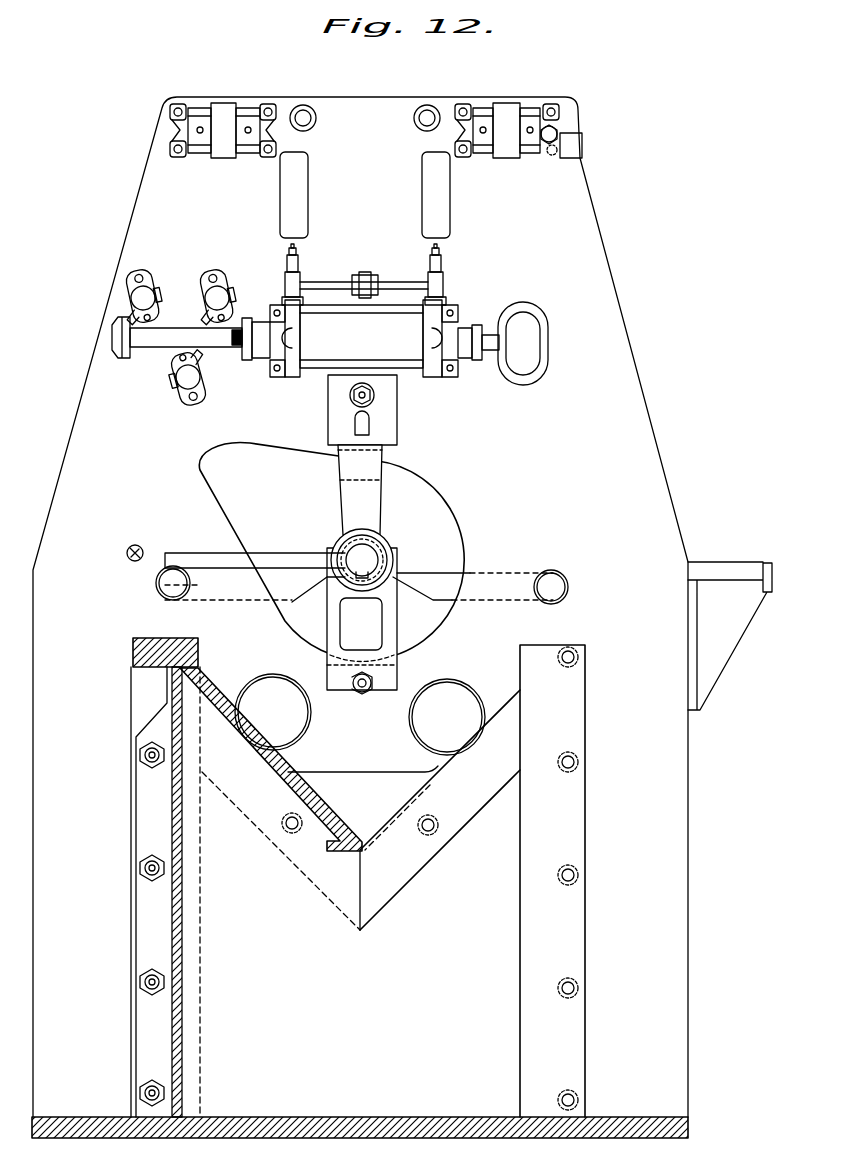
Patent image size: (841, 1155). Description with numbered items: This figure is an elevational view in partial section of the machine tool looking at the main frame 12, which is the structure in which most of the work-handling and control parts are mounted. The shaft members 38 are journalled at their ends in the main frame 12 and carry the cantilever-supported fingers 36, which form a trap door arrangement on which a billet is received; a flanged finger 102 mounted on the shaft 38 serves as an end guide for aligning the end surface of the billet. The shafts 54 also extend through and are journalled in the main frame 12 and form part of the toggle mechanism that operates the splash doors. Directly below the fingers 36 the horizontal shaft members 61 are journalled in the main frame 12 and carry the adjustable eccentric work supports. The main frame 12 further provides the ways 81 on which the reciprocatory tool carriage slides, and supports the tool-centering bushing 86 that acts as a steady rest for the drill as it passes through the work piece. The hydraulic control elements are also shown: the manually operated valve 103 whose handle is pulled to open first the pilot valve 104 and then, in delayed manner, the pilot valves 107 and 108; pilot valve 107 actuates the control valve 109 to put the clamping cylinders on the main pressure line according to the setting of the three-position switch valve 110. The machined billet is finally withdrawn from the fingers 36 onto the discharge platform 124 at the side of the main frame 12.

The main frame 12 is at (78, 447).
The fingers 36 is at (280, 588).
The shaft members 38 is at (162, 584).
The shafts 54 is at (313, 128).
The horizontal shaft members 61 is at (292, 723).
The ways 81 is at (133, 647).
The tool-centering bushing 86 is at (374, 554).
The flanged finger 102 is at (268, 553).
The valve 103 is at (330, 355).
The pilot valve 104 is at (138, 293).
The pilot valve 107 is at (180, 388).
The pilot valve 108 is at (224, 292).
The control valve 109 is at (219, 104).
The switch valve 110 is at (513, 106).
The discharge platform 124 is at (737, 566).